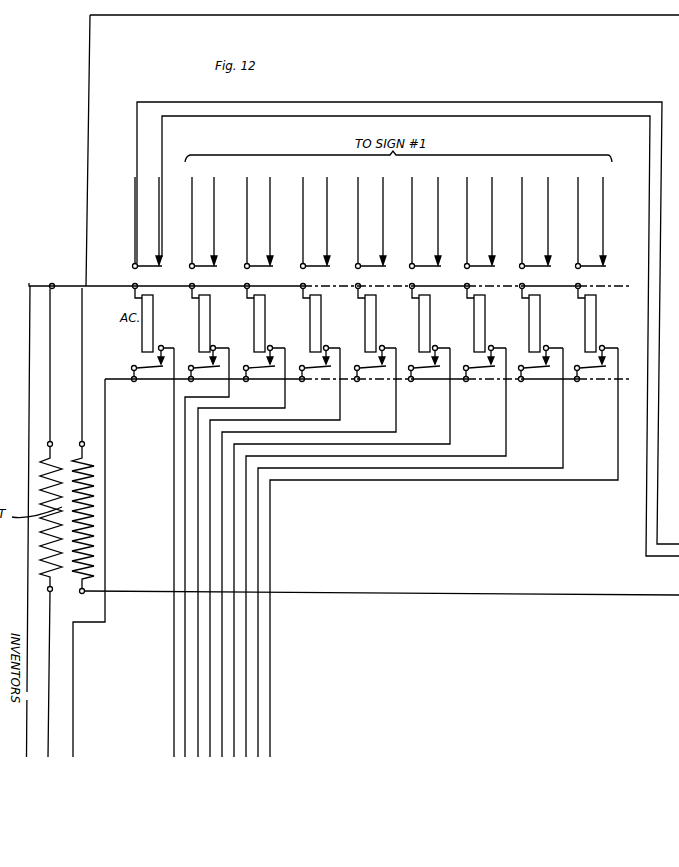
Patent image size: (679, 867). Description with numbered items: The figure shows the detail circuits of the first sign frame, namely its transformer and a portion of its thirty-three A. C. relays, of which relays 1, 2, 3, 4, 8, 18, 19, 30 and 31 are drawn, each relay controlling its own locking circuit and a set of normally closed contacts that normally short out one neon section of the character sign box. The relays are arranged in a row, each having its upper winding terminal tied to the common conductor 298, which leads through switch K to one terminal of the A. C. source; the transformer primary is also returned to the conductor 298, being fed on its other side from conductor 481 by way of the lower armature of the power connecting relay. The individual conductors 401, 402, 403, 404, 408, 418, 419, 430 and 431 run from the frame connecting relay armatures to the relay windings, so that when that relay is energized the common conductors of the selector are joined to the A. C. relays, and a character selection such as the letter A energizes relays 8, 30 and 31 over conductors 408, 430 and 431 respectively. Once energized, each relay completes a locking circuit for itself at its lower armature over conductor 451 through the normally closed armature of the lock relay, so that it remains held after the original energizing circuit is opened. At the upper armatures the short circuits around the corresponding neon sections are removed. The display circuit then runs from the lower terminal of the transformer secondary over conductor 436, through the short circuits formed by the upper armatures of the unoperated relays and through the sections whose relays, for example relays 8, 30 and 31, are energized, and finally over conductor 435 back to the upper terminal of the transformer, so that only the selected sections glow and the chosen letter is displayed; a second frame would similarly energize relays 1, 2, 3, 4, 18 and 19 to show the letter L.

The conductor 435 is at (564, 19).
The conductor 298 is at (72, 281).
The conductor 481 is at (48, 709).
The conductor 451 is at (73, 723).
The conductor 436 is at (567, 600).
The conductor 401 is at (172, 740).
The conductor 402 is at (207, 552).
The conductor 403 is at (241, 552).
The conductor 404 is at (275, 552).
The conductor 408 is at (309, 552).
The conductor 418 is at (342, 552).
The conductor 419 is at (376, 552).
The conductor 430 is at (410, 552).
The conductor 431 is at (270, 740).
The A. C. relay 1 is at (153, 271).
The A. C. relay 2 is at (209, 271).
The A. C. relay 3 is at (265, 271).
The A. C. relay 4 is at (320, 271).
The A. C. relay 8 is at (376, 271).
The A. C. relay 18 is at (430, 271).
The A. C. relay 19 is at (485, 271).
The A. C. relay 30 is at (541, 271).
The A. C. relay 31 is at (597, 271).